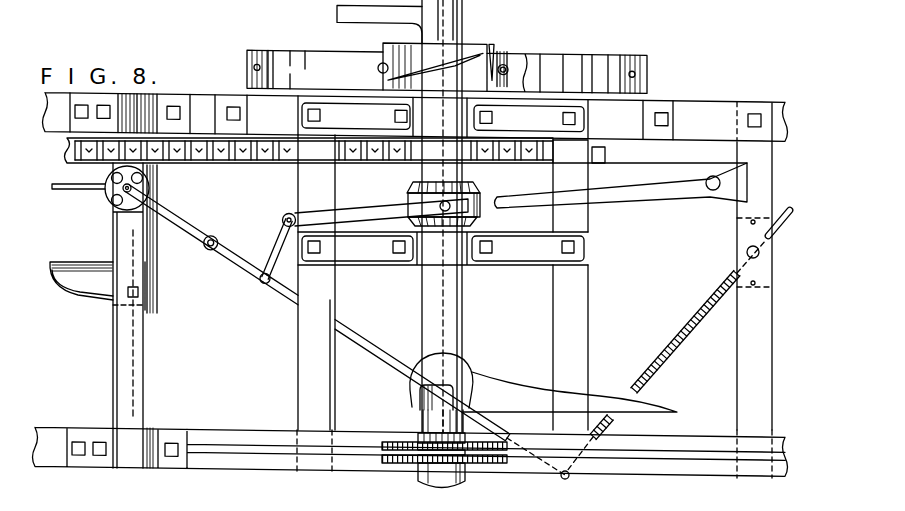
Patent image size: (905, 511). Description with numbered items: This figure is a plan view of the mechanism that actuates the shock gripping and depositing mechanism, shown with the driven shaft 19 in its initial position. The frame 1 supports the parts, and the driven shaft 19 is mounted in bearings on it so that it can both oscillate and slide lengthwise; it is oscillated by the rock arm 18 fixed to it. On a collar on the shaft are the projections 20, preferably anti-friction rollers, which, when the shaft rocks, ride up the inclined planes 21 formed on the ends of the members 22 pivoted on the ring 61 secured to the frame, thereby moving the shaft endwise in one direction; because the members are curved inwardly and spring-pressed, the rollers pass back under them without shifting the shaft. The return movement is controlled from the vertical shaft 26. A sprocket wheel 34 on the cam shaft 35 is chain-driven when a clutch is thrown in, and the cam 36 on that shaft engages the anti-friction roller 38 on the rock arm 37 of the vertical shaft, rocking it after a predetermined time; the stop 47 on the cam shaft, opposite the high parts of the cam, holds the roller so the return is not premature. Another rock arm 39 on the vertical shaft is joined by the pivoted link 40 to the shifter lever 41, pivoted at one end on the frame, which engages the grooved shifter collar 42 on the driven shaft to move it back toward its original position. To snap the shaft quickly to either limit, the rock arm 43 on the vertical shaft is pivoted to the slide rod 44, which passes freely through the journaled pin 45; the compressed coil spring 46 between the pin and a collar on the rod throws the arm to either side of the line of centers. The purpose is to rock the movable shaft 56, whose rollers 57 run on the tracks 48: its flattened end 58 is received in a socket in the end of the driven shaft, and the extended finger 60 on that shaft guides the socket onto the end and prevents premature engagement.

The frame 1 is at (297, 395).
The rock arm 18 is at (335, 12).
The driven shaft 19 is at (463, 302).
The projections 20 is at (379, 64).
The inclined planes 21 is at (395, 66).
The members 22 is at (491, 60).
The vertical shaft 26 is at (210, 251).
The sprocket wheel 34 is at (215, 150).
The cam shaft 35 is at (113, 373).
The cam 36 is at (87, 294).
The rock arm 37 is at (192, 230).
The anti-friction roller 38 is at (150, 186).
The rock arm 39 is at (250, 276).
The pivoted link 40 is at (276, 243).
The shifter lever 41 is at (343, 214).
The grooved shifter collar 42 is at (484, 204).
The rock arm 43 is at (372, 353).
The slide rod 44 is at (722, 286).
The journaled pin 45 is at (747, 252).
The coil spring 46 is at (692, 319).
The stop 47 is at (70, 192).
The tracks 48 is at (220, 445).
The movable shaft 56 is at (418, 420).
The rollers 57 is at (383, 444).
The flattened end 58 is at (445, 382).
The extended finger 60 is at (666, 406).
The ring 61 is at (302, 50).